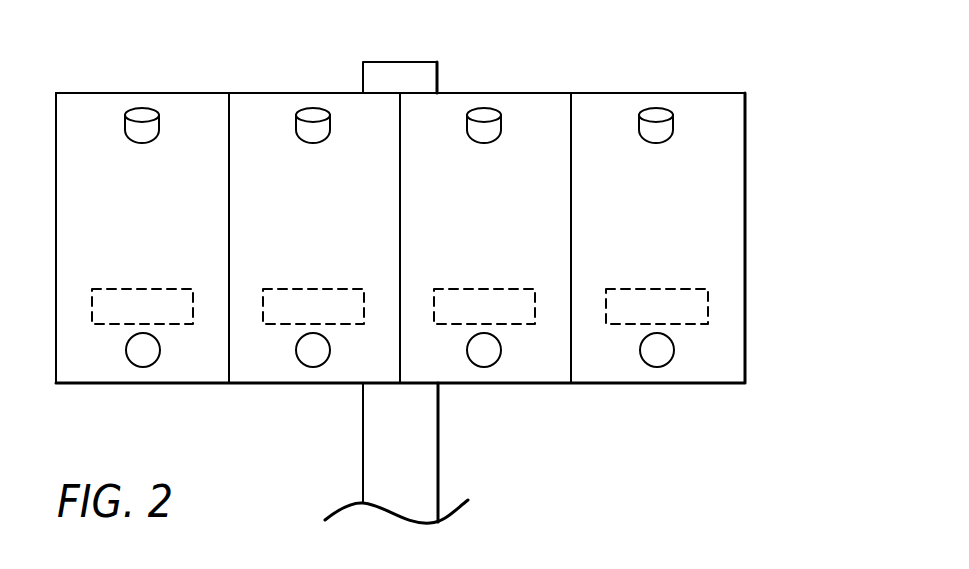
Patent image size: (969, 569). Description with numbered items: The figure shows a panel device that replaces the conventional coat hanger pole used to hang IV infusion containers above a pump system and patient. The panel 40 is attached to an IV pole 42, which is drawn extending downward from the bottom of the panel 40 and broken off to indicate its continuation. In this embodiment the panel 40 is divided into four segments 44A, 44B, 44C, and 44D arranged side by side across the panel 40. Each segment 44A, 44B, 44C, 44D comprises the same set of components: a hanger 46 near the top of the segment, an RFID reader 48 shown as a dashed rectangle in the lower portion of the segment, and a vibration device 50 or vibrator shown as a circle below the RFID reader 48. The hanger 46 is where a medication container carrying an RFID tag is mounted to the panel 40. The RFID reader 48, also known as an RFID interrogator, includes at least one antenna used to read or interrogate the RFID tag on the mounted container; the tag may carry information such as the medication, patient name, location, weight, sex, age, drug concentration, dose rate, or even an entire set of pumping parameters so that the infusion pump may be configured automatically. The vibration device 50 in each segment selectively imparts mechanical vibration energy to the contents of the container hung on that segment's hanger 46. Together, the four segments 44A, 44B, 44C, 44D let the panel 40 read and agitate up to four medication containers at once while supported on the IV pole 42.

The panel 40 is at (788, 130).
The IV pole 42 is at (422, 450).
The first segment 44A is at (106, 93).
The second segment 44B is at (281, 93).
The third segment 44C is at (463, 93).
The fourth segment 44D is at (620, 93).
The hanger 46 is at (141, 108).
The RFID reader 48 is at (92, 305).
The vibration device 50 is at (160, 350).